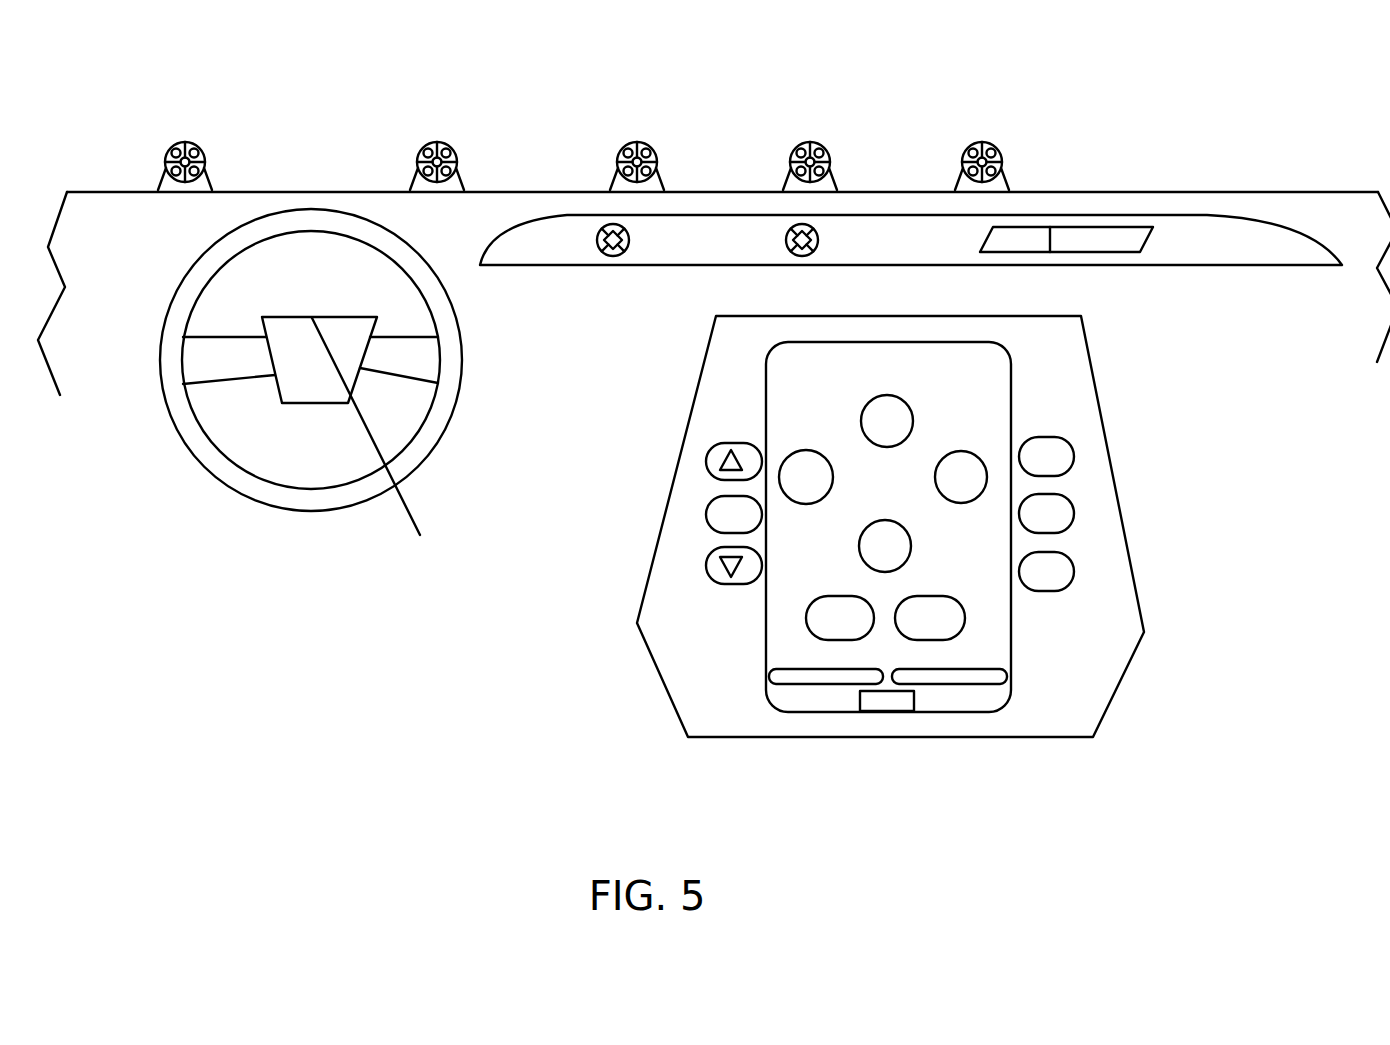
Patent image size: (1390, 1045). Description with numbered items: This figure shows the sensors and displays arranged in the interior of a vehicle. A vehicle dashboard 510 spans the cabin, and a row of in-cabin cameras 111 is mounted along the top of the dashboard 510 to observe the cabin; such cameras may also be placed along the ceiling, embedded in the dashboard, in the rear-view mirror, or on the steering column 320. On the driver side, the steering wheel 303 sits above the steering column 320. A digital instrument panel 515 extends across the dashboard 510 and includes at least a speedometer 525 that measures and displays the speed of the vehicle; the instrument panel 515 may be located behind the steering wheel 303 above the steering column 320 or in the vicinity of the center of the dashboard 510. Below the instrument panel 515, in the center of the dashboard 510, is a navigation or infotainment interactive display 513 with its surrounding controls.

The in-cabin camera 111 is at (203, 143).
The vehicle dashboard 510 is at (714, 293).
The steering wheel 303 is at (220, 455).
The steering column 320 is at (386, 449).
The instrument panel 515 is at (1208, 218).
The speedometer 525 is at (800, 256).
The interactive display 513 is at (1082, 419).